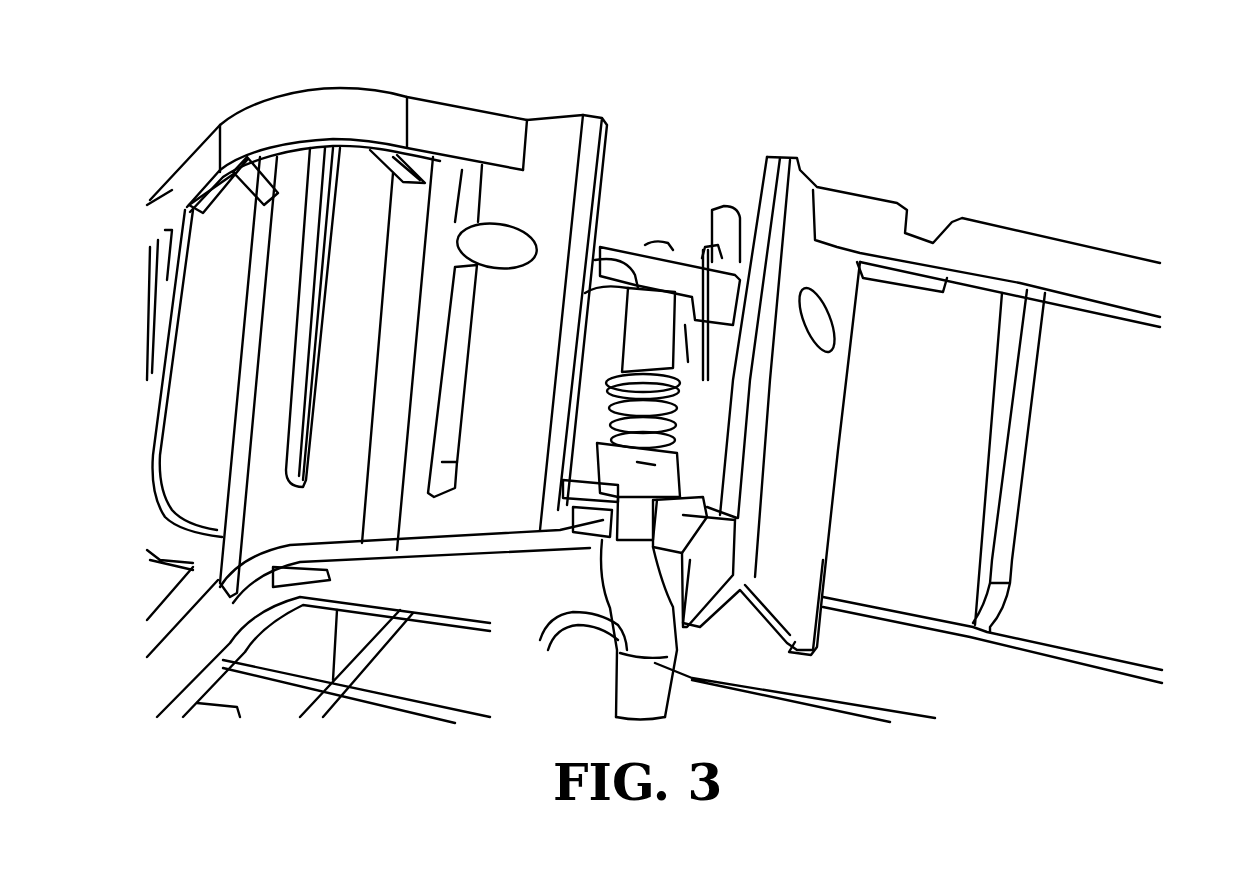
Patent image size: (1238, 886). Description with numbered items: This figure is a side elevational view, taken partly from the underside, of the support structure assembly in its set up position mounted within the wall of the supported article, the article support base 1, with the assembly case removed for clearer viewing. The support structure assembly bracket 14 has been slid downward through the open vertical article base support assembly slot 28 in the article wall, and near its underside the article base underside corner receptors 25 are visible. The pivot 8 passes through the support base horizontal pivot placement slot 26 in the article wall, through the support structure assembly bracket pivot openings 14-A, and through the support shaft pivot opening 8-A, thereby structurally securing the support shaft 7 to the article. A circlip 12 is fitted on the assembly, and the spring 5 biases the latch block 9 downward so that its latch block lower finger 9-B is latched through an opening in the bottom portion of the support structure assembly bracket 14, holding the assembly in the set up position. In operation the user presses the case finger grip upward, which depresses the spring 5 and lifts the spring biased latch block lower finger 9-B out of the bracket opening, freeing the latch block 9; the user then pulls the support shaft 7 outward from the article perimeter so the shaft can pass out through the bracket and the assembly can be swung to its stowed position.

The article support base 1 is at (447, 96).
The article base support assembly slot 28 is at (670, 193).
The support shaft pivot opening 8-A is at (573, 257).
The pivot 8 is at (620, 240).
The support structure assembly bracket pivot openings 14-A is at (737, 212).
The circlip 12 is at (603, 366).
The spring 5 is at (610, 405).
The latch block 9 is at (605, 460).
The latch block lower finger 9-B is at (607, 530).
The support shaft 7 is at (633, 588).
The article base underside corner receptors 25 is at (313, 572).
The support structure assembly bracket 14 is at (683, 408).
The support base horizontal pivot placement slot 26 is at (820, 322).